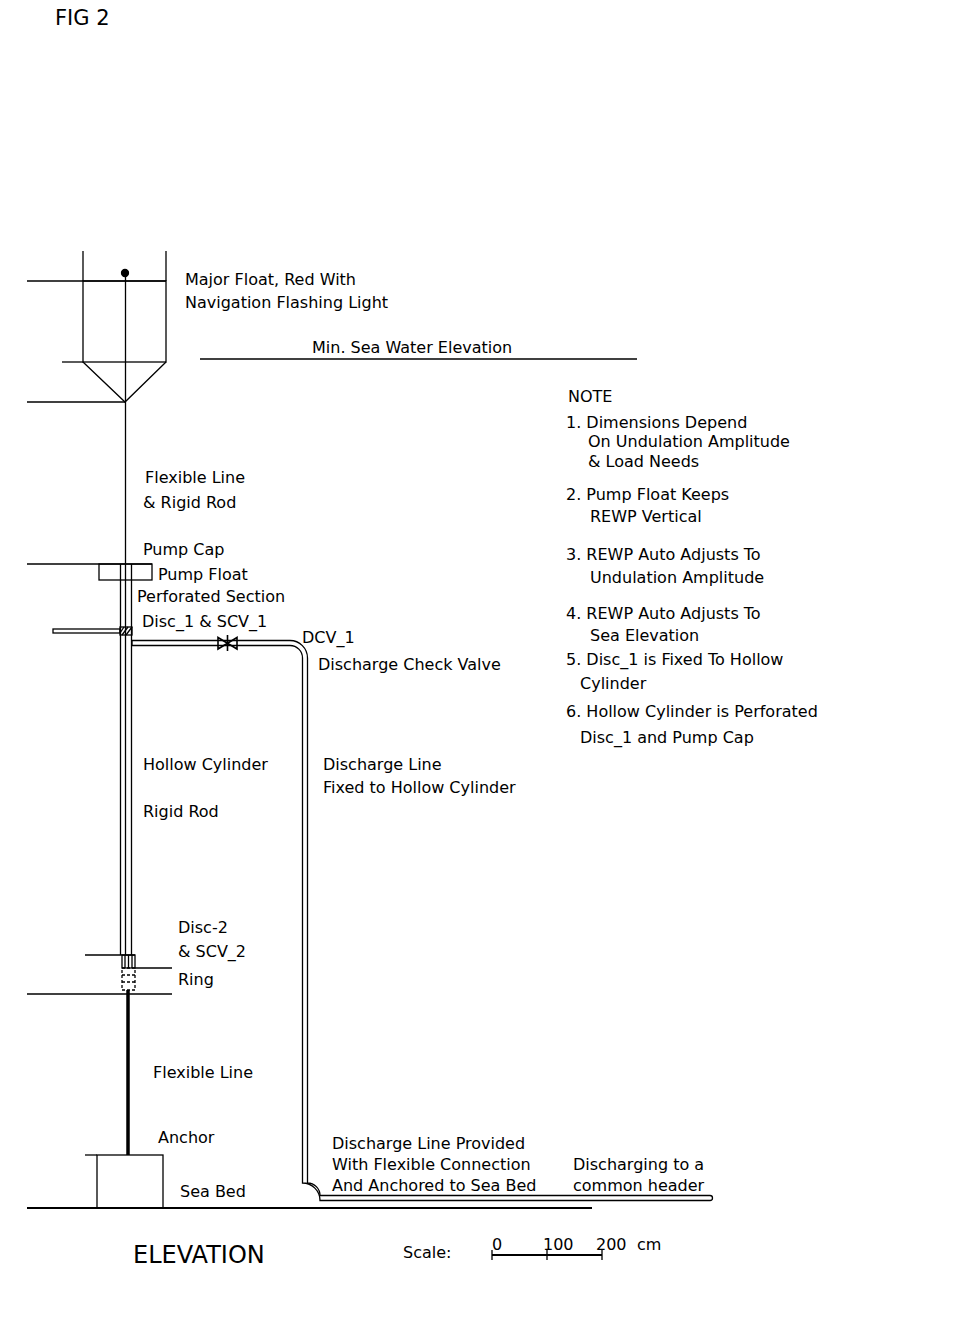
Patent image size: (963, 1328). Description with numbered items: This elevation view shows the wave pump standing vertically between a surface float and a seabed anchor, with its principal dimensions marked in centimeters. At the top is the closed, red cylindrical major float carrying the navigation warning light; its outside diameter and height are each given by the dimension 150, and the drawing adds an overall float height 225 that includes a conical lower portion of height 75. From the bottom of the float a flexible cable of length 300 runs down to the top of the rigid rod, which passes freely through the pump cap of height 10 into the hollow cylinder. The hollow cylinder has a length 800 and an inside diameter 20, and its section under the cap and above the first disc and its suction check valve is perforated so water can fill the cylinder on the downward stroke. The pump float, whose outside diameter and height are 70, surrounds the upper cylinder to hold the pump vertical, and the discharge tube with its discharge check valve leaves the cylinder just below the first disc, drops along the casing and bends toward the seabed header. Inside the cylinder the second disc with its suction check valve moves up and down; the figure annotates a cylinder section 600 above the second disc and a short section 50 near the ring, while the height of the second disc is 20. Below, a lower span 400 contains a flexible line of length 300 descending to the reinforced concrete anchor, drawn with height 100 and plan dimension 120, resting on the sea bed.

The major float diameter and height dimension 150 is at (83, 251).
The major float total height dimension (cm) 225 is at (27, 281).
The float cone height dimension (cm) 75 is at (62, 362).
The flexible cable and flexible line length dimension 300 is at (27, 402).
The hollow cylinder and rigid rod length dimension 800 is at (27, 564).
The anchor section height dimension (cm) 400 is at (27, 1208).
The anchor length and width dimension 120 is at (85, 564).
The pump cap height dimension 10 is at (53, 595).
The hollow cylinder length dimension (cm) 600 is at (85, 955).
The pump float outside diameter and height dimension 70 is at (85, 994).
The hollow cylinder inside diameter and Disc_2 height dimension 20 is at (158, 927).
The ring height dimension (cm) 50 is at (170, 927).
The anchor height dimension 100 is at (85, 1155).